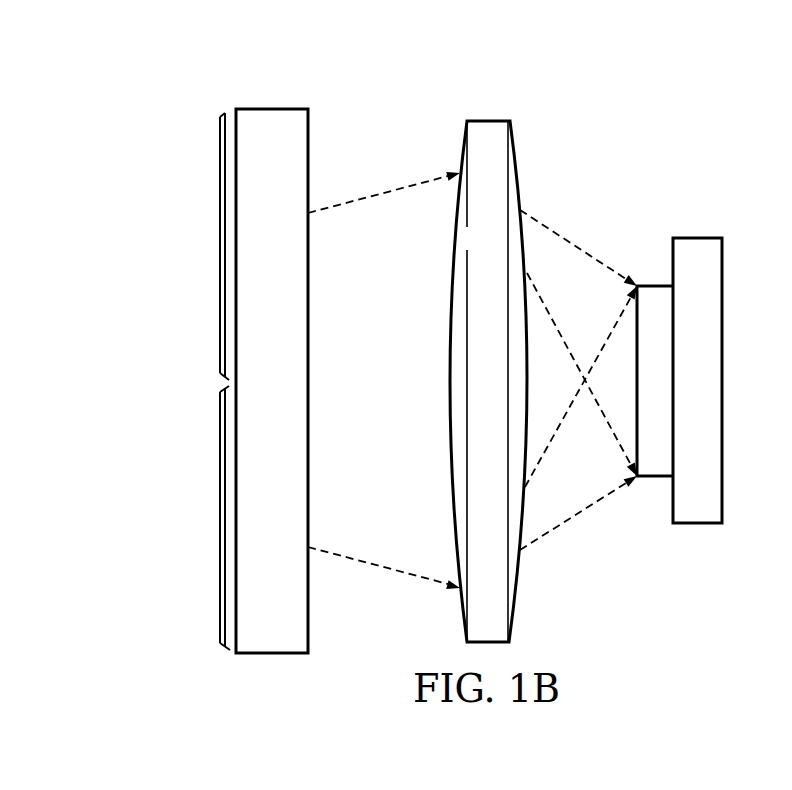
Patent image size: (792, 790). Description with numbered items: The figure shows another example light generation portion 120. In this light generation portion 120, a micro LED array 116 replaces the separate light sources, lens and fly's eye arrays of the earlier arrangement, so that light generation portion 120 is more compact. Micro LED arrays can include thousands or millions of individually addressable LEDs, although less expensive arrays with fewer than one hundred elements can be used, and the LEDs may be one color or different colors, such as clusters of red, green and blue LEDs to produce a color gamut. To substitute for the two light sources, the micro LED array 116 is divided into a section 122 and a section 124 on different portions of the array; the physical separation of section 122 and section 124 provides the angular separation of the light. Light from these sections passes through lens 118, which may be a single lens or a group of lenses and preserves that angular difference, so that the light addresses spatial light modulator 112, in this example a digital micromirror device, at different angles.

The light generation portion 120 is at (157, 88).
The micro LED array 116 is at (272, 109).
The section 122 is at (226, 239).
The section 124 is at (226, 512).
The lens 118 is at (488, 121).
The spatial light modulator 112 is at (697, 238).